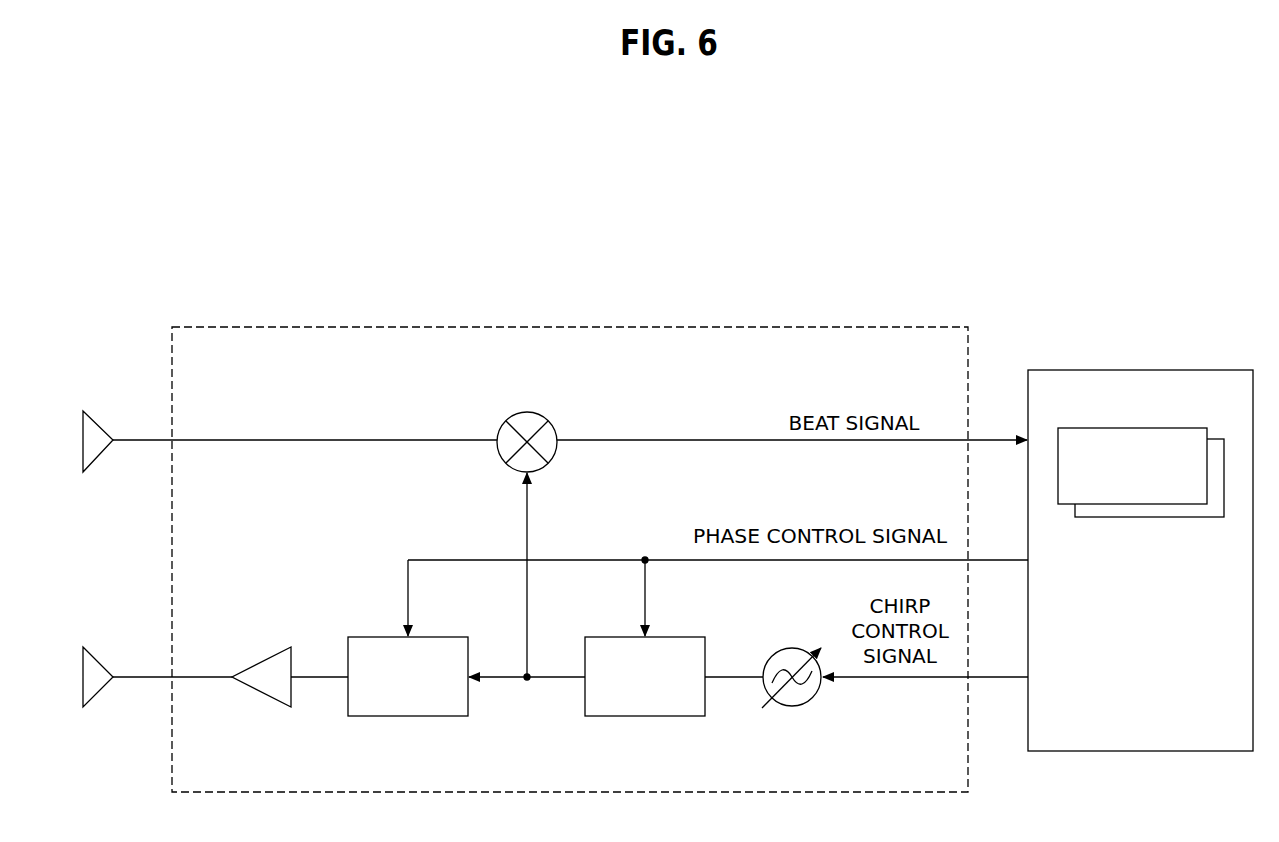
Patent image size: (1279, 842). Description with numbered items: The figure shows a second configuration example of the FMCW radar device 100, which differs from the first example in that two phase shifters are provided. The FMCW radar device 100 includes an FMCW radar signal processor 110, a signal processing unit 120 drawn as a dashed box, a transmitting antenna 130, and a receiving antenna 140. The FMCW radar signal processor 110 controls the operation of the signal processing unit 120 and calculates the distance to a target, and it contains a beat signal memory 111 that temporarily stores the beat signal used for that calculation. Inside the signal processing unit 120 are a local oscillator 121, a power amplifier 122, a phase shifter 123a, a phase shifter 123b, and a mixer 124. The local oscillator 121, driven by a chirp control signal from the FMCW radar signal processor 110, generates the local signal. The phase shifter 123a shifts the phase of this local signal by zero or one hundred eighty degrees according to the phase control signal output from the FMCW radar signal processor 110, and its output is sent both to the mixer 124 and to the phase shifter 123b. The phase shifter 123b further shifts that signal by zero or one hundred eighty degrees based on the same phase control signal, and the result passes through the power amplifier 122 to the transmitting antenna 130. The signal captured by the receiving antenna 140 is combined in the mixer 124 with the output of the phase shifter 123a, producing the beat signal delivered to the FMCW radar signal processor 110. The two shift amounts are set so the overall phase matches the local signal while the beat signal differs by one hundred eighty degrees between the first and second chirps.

The FMCW radar device 100 is at (997, 241).
The FMCW radar signal processor 110 is at (1190, 369).
The beat signal memory 111 is at (1147, 427).
The signal processing unit 120 is at (848, 326).
The local oscillator 121 is at (790, 707).
The power amplifier 122 is at (275, 702).
The phase shifter 123a is at (670, 636).
The phase shifter 123b is at (432, 636).
The mixer 124 is at (527, 411).
The transmitting antenna 130 is at (103, 698).
The receiving antenna 140 is at (103, 422).